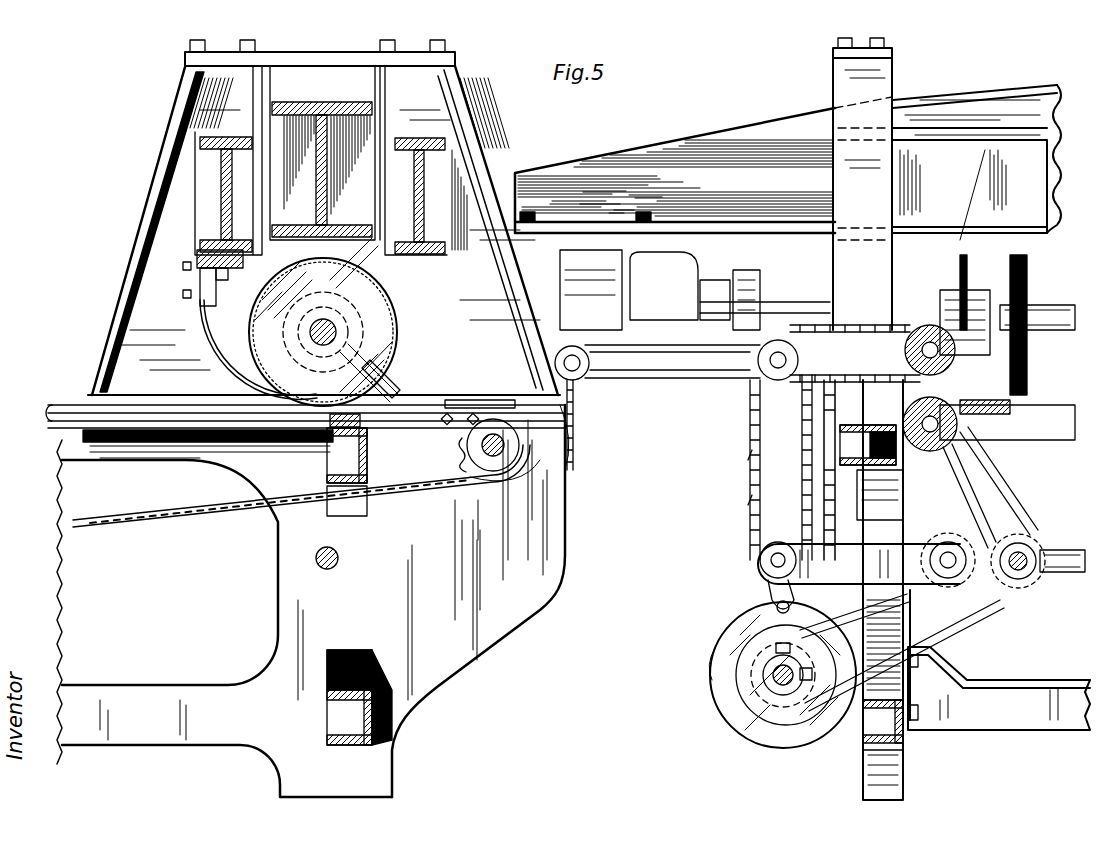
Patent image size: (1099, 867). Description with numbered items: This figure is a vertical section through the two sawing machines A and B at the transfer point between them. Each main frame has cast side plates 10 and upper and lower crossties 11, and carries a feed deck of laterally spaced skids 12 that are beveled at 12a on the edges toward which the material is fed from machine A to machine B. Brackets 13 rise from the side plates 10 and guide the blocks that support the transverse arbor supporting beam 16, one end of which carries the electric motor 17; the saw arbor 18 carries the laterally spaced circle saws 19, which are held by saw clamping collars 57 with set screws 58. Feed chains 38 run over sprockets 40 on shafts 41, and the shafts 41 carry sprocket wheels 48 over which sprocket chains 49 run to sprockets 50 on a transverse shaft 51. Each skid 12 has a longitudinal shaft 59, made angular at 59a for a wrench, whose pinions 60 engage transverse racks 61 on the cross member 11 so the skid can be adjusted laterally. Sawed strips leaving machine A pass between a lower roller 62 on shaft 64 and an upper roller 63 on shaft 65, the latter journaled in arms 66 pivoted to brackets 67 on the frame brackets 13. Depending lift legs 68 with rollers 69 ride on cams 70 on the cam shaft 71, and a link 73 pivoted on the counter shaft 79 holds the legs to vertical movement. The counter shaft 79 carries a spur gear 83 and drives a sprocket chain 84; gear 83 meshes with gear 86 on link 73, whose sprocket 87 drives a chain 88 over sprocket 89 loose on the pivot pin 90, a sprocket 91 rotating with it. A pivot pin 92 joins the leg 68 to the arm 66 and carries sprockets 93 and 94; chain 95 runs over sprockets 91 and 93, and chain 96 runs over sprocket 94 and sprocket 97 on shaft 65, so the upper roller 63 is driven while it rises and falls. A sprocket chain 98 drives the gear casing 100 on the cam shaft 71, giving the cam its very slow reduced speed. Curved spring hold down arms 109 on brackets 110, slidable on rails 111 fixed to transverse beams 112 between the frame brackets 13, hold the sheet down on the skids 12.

The side plates 10 is at (920, 778).
The crossties 11 is at (350, 518).
The skids 12 is at (478, 400).
The bevel 12a is at (999, 481).
The brackets 13 is at (100, 340).
The arbor supporting beam 16 is at (316, 187).
The electric motor 17 is at (680, 286).
The saw arbor 18 is at (330, 335).
The circle saws 19 is at (385, 355).
The feed chains 38 is at (195, 515).
The sprockets 40 is at (481, 531).
The sprocket shafts 41 is at (510, 477).
The sprocket wheels 48 is at (580, 470).
The sprocket chains 49 is at (578, 450).
The sprockets 50 is at (798, 663).
The transverse shaft 51 is at (338, 565).
The saw clamping collars 57 is at (950, 255).
The set screws 58 is at (1010, 312).
The skid adjusting shaft 59 is at (480, 418).
The angular end 59a is at (578, 428).
The pinions 60 is at (320, 432).
The transverse racks 61 is at (347, 455).
The lower transverse roller 62 is at (885, 482).
The upper transverse roller 63 is at (955, 360).
The shaft 64 is at (922, 475).
The shaft 65 is at (950, 300).
The arms 66 is at (737, 377).
The brackets 67 is at (590, 300).
The lift legs 68 is at (769, 470).
The rollers 69 is at (770, 625).
The cams 70 is at (775, 730).
The cam shaft 71 is at (745, 715).
The link 73 is at (859, 564).
The counter shaft 79 is at (1040, 560).
The spur gear 83 is at (1028, 588).
The sprocket chain 84 is at (969, 496).
The gear 86 is at (950, 585).
The sprocket 87 is at (904, 655).
The sprocket chain 88 is at (854, 616).
The sprocket 89 is at (778, 520).
The pivot pin 90 is at (762, 580).
The sprocket 91 is at (778, 340).
The pivot pin 92 is at (757, 372).
The sprocket 93 is at (812, 330).
The sprocket 94 is at (752, 455).
The sprocket chain 95 is at (752, 500).
The sprocket chain 96 is at (855, 320).
The sprocket 97 is at (976, 292).
The sprocket chain 98 is at (990, 620).
The gear casing 100 is at (715, 680).
The spring hold down arms 109 is at (215, 352).
The brackets 110 is at (200, 278).
The rails 111 is at (224, 276).
The transverse beams 112 is at (222, 193).
The machine A is at (565, 535).
The machine B is at (982, 751).